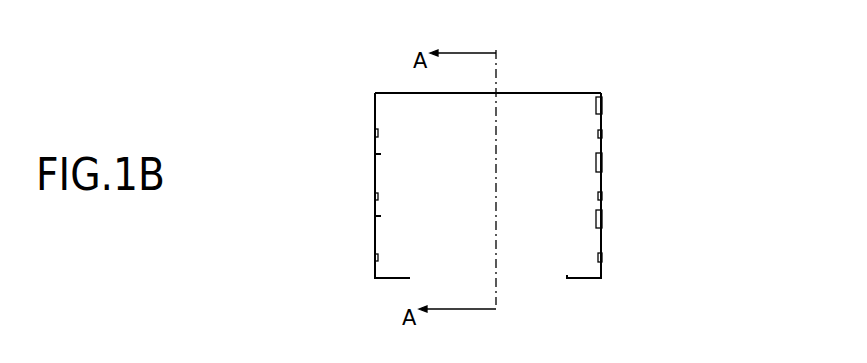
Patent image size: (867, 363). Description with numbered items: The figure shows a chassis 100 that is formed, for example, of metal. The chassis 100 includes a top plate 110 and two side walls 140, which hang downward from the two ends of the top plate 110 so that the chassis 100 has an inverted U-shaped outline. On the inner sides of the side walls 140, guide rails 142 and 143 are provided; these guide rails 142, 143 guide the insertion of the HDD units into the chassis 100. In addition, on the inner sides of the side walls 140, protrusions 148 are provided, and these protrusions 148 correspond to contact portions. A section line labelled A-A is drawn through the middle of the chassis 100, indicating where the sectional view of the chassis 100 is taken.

The chassis 100 is at (588, 93).
The top plate 110 is at (522, 93).
The side wall 140 is at (375, 178).
The guide rail 142 is at (378, 154).
The guide rail 143 is at (603, 105).
The protrusion 148 is at (375, 133).